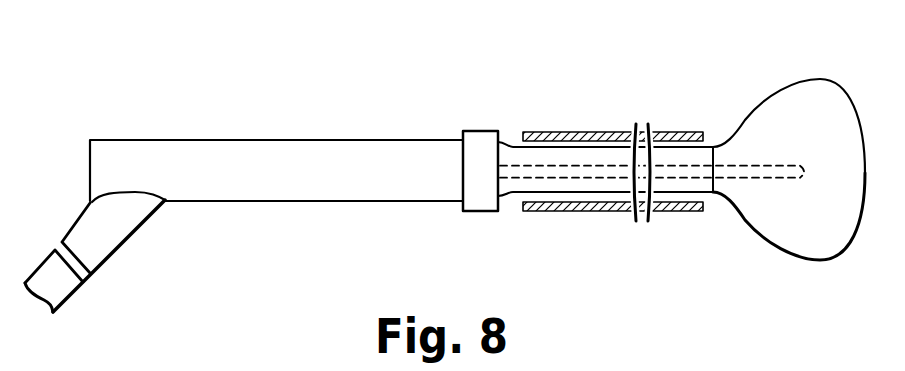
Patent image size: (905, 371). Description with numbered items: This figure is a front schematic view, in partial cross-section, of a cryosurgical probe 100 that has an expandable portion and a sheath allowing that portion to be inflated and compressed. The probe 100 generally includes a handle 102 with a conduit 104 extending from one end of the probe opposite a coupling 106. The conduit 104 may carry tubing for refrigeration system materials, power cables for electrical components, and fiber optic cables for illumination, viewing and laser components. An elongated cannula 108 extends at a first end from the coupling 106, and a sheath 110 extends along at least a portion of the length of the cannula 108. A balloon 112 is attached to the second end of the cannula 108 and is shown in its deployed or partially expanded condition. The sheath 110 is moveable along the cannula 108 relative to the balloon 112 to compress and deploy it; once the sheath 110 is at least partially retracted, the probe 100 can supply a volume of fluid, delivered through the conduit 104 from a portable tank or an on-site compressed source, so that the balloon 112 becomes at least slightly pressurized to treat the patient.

The cryosurgical probe 100 is at (559, 74).
The handle 102 is at (263, 139).
The conduit 104 is at (133, 235).
The coupling 106 is at (485, 130).
The cannula 108 is at (667, 212).
The sheath 110 is at (590, 131).
The balloon 112 is at (820, 79).